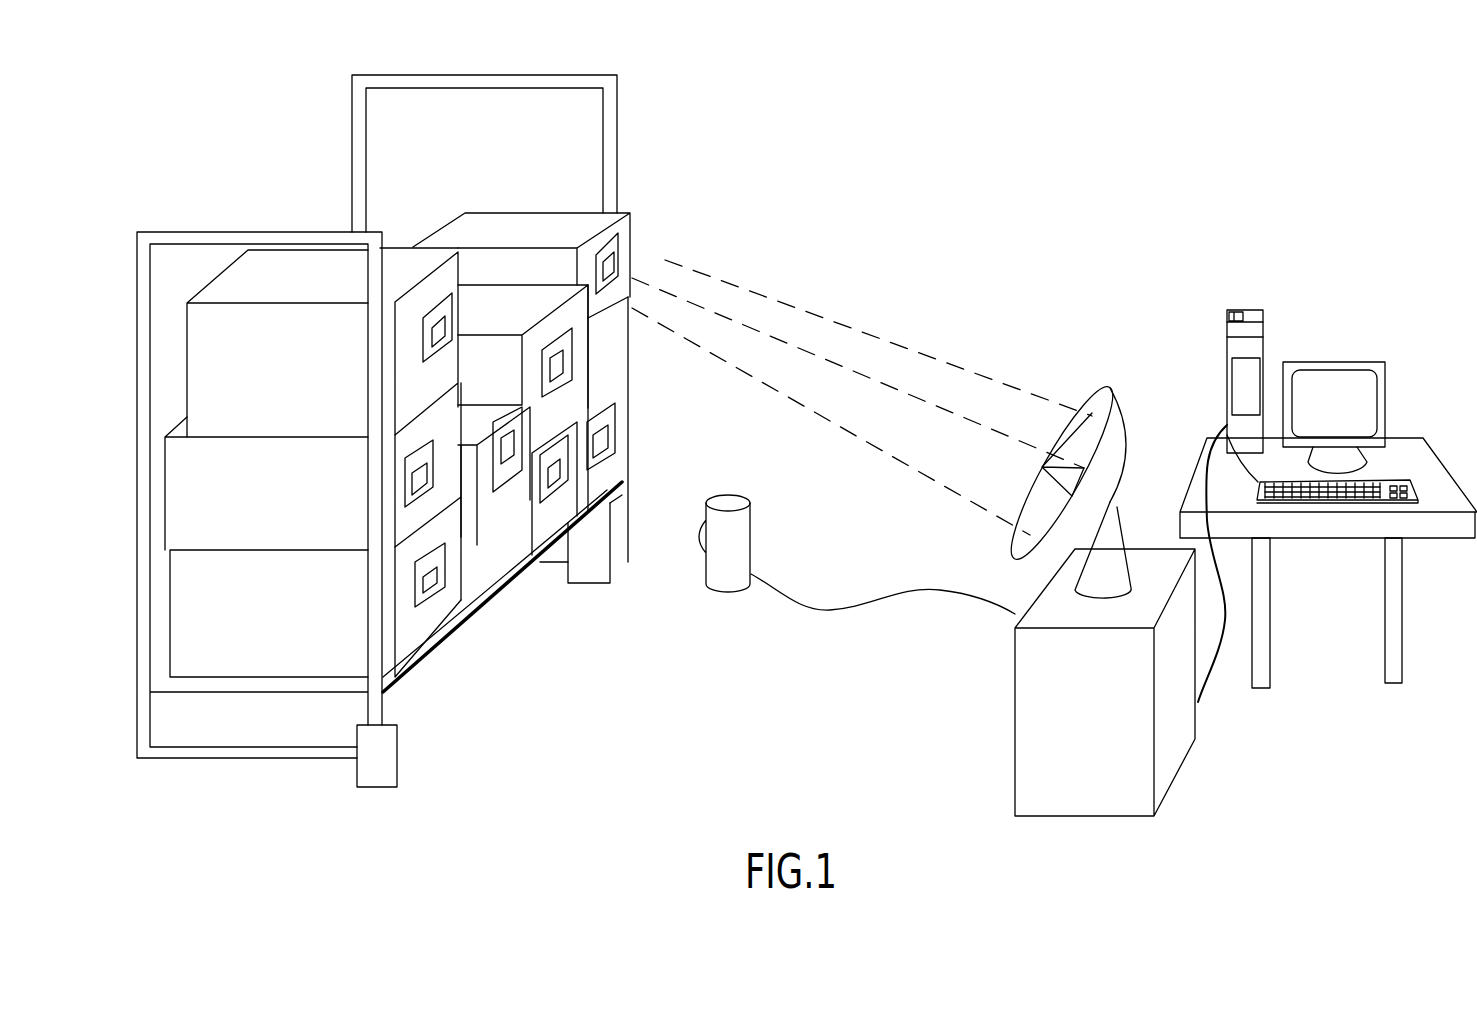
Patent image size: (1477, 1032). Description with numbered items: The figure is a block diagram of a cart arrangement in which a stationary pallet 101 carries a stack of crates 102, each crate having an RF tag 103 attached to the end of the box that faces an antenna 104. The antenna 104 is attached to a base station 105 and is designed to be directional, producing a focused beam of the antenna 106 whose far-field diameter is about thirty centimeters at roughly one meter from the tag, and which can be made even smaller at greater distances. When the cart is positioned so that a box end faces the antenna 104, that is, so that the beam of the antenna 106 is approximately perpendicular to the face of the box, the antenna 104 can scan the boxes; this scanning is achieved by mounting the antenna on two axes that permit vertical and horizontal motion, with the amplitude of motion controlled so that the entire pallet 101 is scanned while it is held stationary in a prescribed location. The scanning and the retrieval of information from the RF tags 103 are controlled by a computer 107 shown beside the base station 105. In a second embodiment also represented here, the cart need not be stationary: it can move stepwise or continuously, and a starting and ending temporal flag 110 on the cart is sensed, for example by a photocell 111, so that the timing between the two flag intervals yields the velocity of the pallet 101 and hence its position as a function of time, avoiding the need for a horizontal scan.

The stationary pallet 101 is at (612, 110).
The crates 102 is at (620, 398).
The RF tag 103 is at (630, 228).
The antenna 104 is at (1110, 388).
The base station 105 is at (1015, 765).
The beam of the antenna 106 is at (835, 322).
The computer 107 is at (1253, 310).
The temporal flag 110 is at (400, 745).
The photocell 111 is at (728, 595).